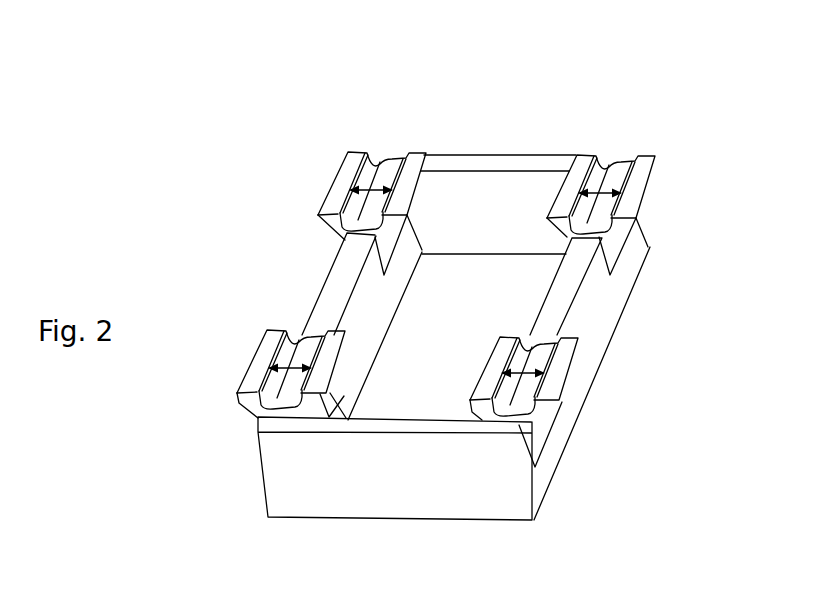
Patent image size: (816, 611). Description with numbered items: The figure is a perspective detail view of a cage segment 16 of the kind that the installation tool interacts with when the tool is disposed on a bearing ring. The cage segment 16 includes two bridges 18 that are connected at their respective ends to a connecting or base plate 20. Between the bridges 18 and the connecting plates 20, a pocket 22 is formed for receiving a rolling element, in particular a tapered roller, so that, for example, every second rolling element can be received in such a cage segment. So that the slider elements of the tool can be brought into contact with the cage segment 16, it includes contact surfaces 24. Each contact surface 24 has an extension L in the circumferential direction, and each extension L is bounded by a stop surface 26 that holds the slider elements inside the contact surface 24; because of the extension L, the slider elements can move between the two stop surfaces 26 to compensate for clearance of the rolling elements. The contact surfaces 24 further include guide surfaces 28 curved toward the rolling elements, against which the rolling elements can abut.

The cage segment 16 is at (632, 80).
The bridge 18 is at (328, 292).
The connecting plate 20 is at (502, 186).
The pocket 22 is at (503, 305).
The contact surface 24 is at (385, 172).
The stop surface 26 is at (352, 158).
The guide surface 28 is at (390, 245).
The extension L is at (374, 184).